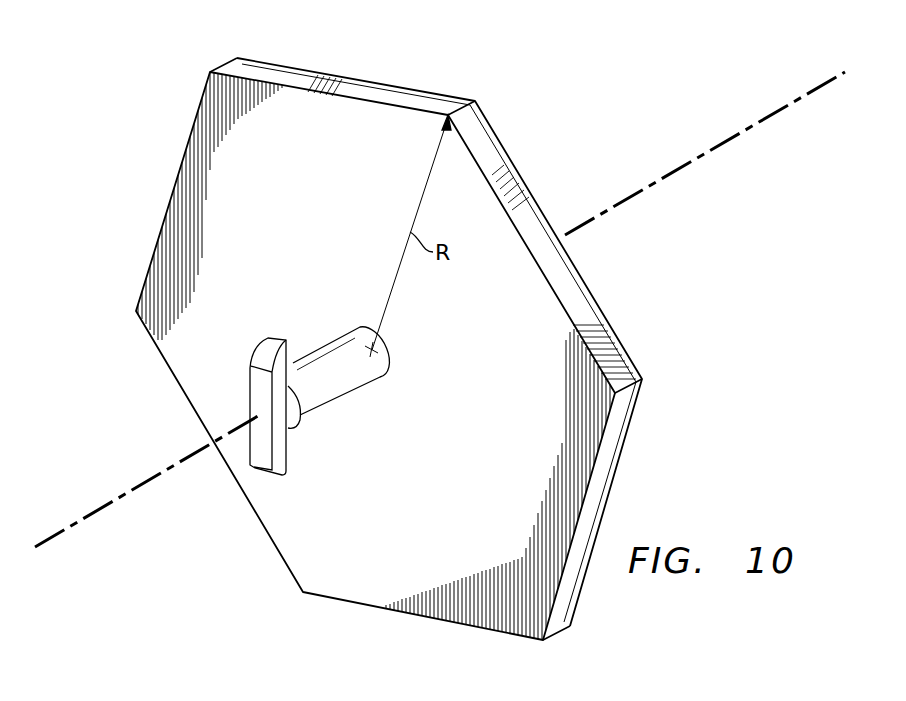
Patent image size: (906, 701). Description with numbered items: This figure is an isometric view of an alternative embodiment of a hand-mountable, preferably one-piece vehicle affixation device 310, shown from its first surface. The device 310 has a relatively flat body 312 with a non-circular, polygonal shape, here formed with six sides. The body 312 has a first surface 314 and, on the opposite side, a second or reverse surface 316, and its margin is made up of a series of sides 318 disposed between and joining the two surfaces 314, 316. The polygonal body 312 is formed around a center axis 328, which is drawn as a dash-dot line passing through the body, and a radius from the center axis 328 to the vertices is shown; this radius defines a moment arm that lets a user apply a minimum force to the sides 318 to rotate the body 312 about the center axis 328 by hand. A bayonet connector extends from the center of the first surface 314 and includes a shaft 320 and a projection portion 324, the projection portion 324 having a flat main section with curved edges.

The vehicle affixation device 310 is at (409, 334).
The body 312 is at (432, 94).
The first surface 314 is at (307, 552).
The second surface 316 is at (571, 283).
The sides 318 is at (272, 70).
The shaft 320 is at (338, 403).
The projection portion 324 is at (277, 338).
The center axis 328 is at (750, 128).